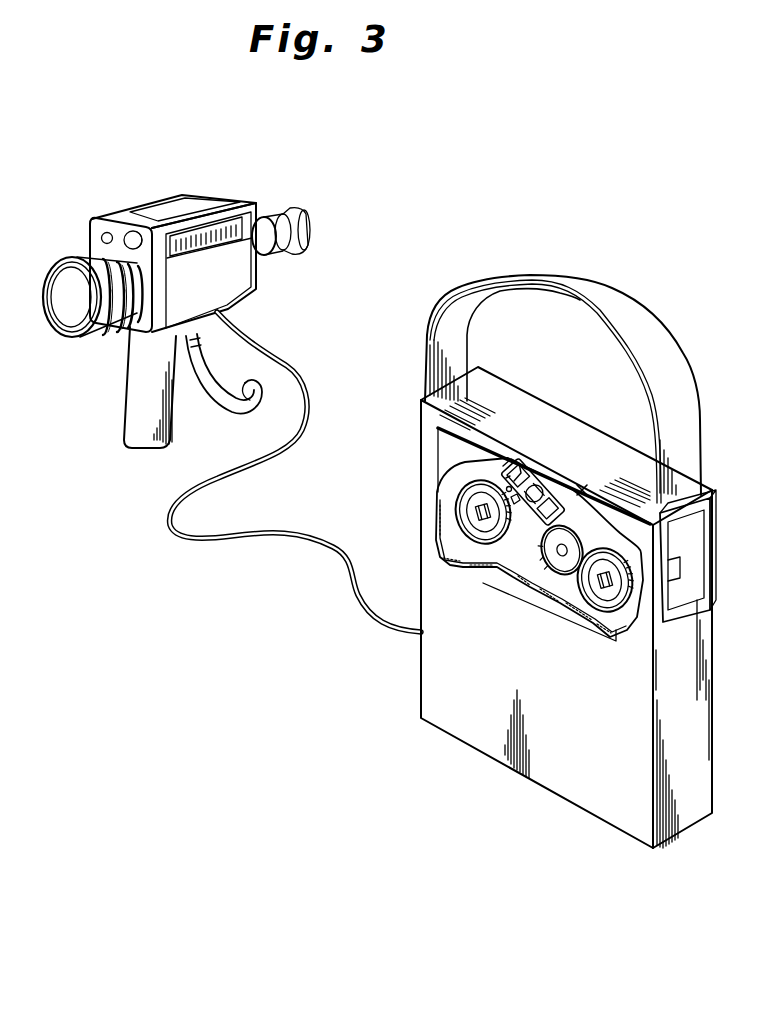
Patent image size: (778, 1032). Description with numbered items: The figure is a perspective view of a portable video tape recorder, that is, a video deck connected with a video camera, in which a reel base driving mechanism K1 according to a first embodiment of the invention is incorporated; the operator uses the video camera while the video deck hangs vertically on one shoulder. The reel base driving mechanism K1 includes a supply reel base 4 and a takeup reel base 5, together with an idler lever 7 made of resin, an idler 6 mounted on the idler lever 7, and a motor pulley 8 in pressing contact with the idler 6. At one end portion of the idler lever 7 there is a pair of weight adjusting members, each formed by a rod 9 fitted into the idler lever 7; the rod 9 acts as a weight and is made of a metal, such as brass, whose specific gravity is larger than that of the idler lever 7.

The supply reel base 4 is at (627, 630).
The takeup reel base 5 is at (502, 522).
The idler 6 is at (578, 568).
The idler lever 7 is at (542, 473).
The motor pulley 8 is at (555, 533).
The rod 9 is at (520, 462).
The reel base driving mechanism K1 is at (583, 490).